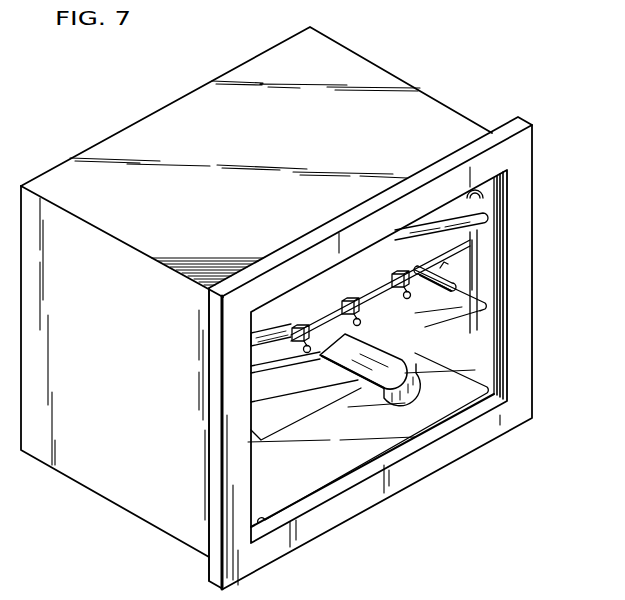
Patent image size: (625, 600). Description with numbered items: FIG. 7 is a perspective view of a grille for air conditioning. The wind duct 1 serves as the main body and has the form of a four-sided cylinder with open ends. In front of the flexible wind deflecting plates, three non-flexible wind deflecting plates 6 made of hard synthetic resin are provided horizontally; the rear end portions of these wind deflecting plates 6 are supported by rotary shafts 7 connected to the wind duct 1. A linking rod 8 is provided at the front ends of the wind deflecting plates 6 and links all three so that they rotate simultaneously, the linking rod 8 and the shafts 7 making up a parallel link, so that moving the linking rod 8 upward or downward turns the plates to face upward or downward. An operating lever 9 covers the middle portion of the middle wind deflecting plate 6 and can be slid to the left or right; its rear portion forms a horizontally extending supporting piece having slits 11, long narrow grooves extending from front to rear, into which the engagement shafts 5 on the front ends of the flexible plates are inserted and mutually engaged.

The wind duct 1 is at (408, 86).
The engagement shaft 5 is at (300, 329).
The non-flexible wind deflecting plate 6 is at (488, 216).
The rotary shaft 7 is at (440, 261).
The linking rod 8 is at (483, 266).
The operating lever 9 is at (383, 399).
The slit 11 is at (304, 357).